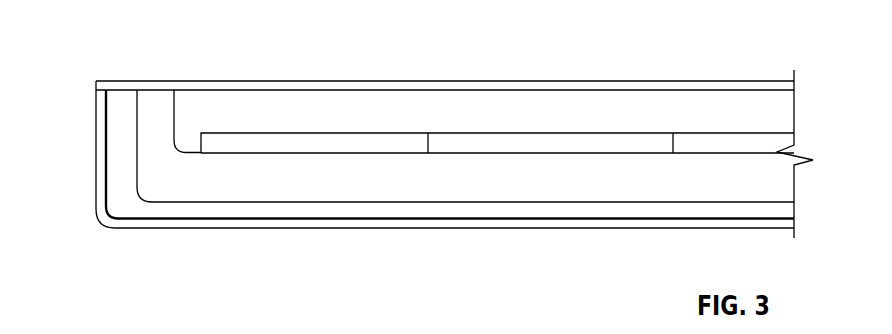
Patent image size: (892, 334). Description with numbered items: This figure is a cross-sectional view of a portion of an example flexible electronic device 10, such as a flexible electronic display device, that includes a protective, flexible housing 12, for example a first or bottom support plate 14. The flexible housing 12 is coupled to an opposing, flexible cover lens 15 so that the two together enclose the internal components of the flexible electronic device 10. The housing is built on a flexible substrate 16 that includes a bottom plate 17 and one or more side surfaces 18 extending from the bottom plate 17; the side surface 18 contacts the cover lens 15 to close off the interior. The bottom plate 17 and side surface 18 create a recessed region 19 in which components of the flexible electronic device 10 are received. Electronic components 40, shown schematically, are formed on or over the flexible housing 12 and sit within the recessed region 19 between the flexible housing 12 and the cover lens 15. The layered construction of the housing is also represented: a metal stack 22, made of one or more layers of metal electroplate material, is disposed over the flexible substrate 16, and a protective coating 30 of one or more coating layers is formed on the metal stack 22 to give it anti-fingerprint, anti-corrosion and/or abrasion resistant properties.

The flexible electronic device 10 is at (125, 51).
The flexible housing 12 is at (152, 245).
The bottom support plate 14 is at (669, 184).
The cover lens 15 is at (547, 80).
The flexible substrate 16 is at (525, 188).
The bottom plate 17 is at (257, 237).
The side surface 18 is at (136, 133).
The recessed region 19 is at (718, 120).
The metal stack 22 is at (428, 208).
The protective coating 30 is at (368, 222).
The electronic components 40 is at (355, 143).